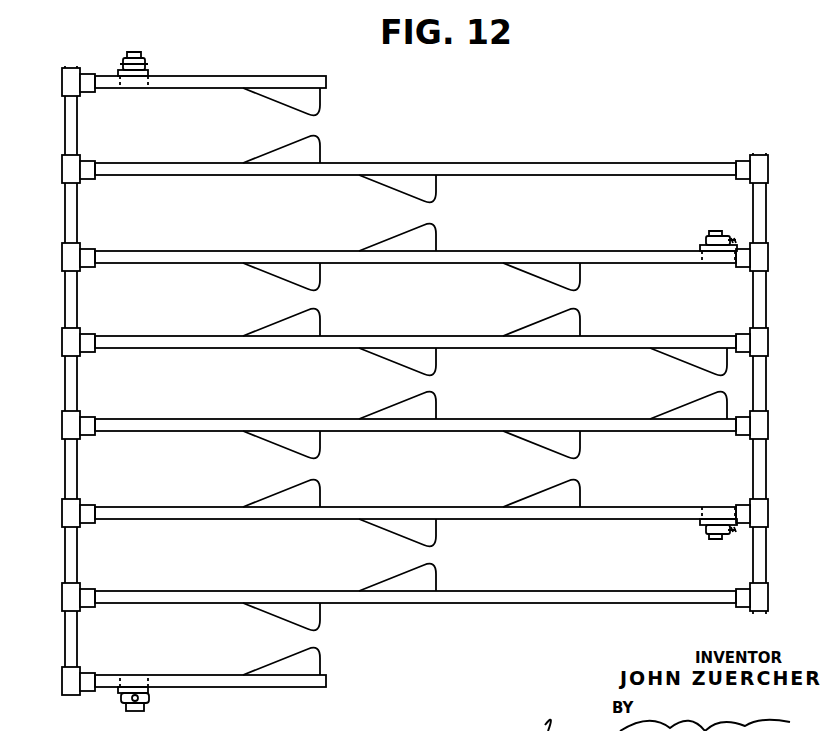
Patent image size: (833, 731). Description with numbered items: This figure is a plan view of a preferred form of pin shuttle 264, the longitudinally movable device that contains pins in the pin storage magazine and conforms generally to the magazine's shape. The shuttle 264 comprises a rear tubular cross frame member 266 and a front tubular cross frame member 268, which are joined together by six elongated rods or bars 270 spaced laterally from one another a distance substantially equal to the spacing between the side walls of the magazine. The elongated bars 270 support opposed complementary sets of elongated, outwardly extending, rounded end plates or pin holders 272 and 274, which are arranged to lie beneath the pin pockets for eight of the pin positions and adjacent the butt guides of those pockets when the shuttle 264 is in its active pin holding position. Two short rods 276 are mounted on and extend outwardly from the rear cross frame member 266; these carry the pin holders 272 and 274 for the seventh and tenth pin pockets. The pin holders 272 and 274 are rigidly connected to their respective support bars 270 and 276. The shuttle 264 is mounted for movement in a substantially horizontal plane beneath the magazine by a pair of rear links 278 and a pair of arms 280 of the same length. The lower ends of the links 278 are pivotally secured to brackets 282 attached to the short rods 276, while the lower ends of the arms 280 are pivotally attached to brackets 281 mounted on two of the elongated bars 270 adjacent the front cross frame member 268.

The shuttle 264 is at (568, 122).
The rear tubular cross frame member 266 is at (63, 396).
The front tubular cross frame member 268 is at (764, 305).
The elongated bars 270 is at (218, 170).
The pin holders 272 is at (315, 102).
The pin holders 274 is at (313, 148).
The short rods 276 is at (202, 78).
The rear links 278 is at (146, 63).
The arms 280 is at (740, 212).
The brackets 281 is at (702, 248).
The brackets 282 is at (118, 75).